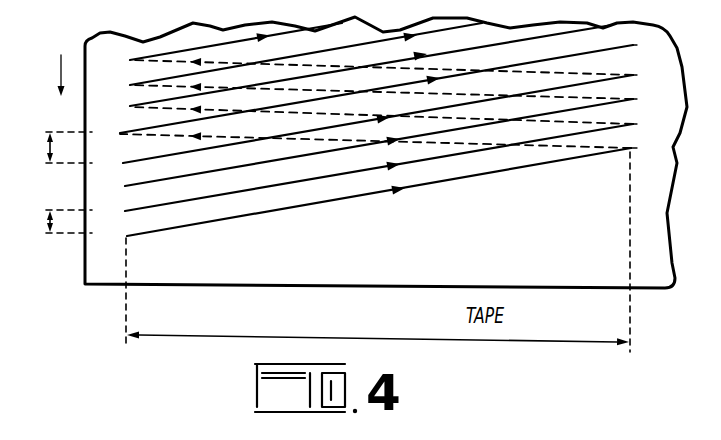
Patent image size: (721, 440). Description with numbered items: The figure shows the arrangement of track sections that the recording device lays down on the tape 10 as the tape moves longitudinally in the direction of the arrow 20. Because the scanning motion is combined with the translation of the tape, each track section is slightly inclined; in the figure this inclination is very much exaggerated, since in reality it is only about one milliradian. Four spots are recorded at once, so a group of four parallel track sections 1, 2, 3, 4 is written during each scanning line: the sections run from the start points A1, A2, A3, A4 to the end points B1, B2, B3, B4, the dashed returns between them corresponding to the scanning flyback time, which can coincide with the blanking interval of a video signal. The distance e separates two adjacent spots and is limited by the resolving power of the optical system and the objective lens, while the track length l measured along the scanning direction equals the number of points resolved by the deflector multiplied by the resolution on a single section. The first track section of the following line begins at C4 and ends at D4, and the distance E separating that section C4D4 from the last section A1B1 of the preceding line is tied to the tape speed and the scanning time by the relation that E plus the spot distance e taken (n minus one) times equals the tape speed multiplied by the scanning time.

The tape 10 is at (489, 329).
The direction of tape movement 20 is at (61, 55).
The first scanning track (A1-B1) 1 is at (378, 121).
The second scanning track (A2-B2) 2 is at (378, 147).
The third scanning track (A3-B3) 3 is at (378, 172).
The fourth scanning track (A4-B4, C4-D4) 4 is at (378, 147).
The track section start point A1 is at (362, 128).
The track start point A2 is at (125, 186).
The track start point A3 is at (125, 211).
The track start point A4 is at (127, 236).
The track section end point B1 is at (398, 77).
The track end point B2 is at (398, 104).
The track end point B3 is at (398, 129).
The track end point B4 is at (393, 156).
The track section start point C4 is at (120, 133).
The track section end point D4 is at (649, 45).
The distance between lines E is at (58, 147).
The distance between adjacent spots e is at (59, 219).
The length of the track sections l is at (378, 252).